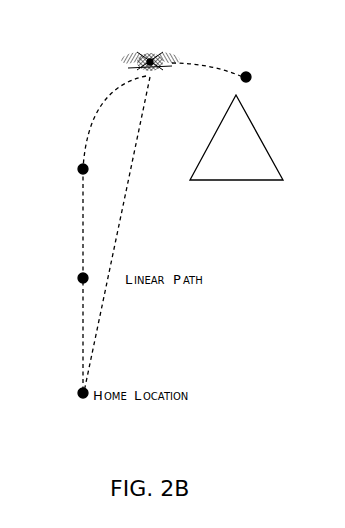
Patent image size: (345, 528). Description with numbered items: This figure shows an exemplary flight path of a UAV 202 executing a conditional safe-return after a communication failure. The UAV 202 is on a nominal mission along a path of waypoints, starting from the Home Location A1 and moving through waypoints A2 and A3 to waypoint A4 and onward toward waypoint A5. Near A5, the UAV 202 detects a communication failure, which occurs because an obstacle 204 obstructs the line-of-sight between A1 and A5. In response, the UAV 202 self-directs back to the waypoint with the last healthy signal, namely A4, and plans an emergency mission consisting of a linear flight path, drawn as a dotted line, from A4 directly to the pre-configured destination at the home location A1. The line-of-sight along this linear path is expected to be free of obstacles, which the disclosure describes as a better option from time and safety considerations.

The UAV 202 is at (114, 67).
The obstacle 204 is at (255, 230).
The home location waypoint A1 is at (62, 395).
The waypoint A2 is at (62, 281).
The waypoint A3 is at (62, 172).
The waypoint with last healthy signal A4 is at (149, 49).
The waypoint A5 is at (246, 57).